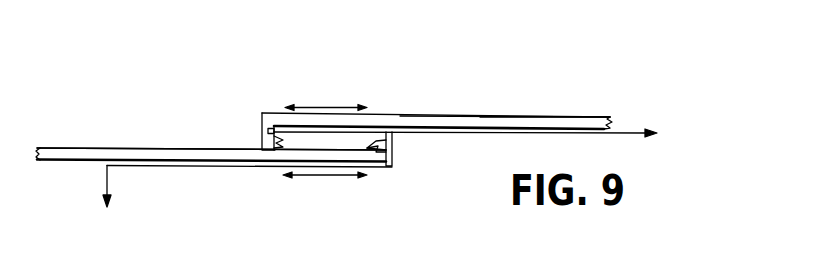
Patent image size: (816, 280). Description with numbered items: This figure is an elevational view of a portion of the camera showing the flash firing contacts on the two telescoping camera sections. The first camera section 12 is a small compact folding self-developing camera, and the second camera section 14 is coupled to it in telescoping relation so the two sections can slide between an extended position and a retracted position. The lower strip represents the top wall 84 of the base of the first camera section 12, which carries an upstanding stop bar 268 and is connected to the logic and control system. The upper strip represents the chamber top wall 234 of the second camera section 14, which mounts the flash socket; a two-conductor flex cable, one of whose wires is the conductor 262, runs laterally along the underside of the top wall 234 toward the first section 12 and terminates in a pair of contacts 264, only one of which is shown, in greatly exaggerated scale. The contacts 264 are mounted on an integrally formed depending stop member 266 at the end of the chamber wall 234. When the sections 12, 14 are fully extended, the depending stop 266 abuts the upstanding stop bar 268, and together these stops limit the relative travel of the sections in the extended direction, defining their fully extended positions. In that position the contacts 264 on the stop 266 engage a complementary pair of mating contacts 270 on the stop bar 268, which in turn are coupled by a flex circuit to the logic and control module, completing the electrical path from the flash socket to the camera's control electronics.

The first camera section 12 is at (61, 137).
The top wall 84 is at (147, 150).
The second camera section 14 is at (545, 113).
The top wall 234 is at (378, 114).
The conductor 262 is at (480, 130).
The contacts 264 is at (268, 131).
The depending stop member 266 is at (263, 143).
The upstanding stop bar 268 is at (393, 134).
The mating contacts 270 is at (380, 138).